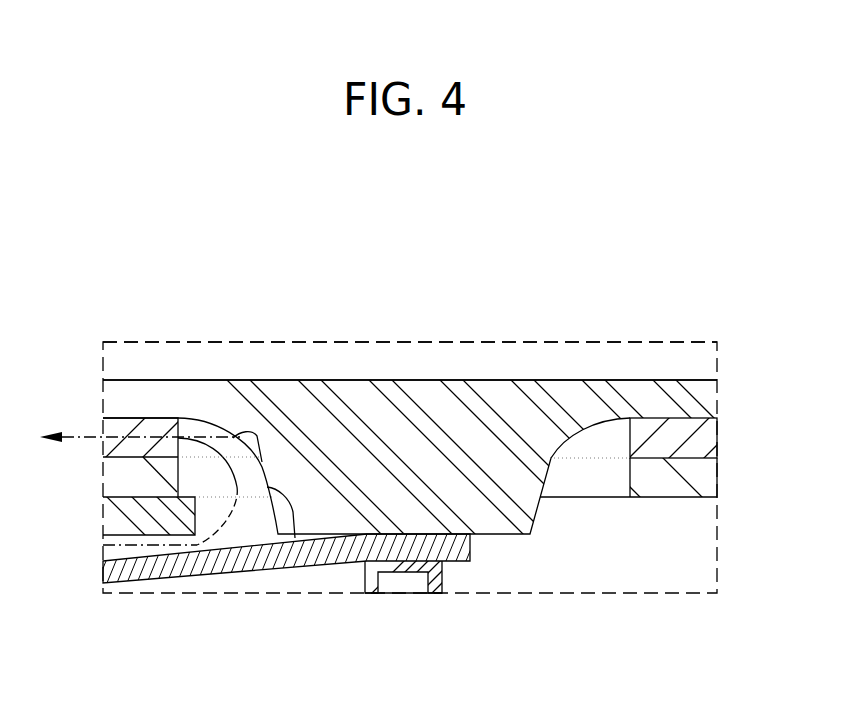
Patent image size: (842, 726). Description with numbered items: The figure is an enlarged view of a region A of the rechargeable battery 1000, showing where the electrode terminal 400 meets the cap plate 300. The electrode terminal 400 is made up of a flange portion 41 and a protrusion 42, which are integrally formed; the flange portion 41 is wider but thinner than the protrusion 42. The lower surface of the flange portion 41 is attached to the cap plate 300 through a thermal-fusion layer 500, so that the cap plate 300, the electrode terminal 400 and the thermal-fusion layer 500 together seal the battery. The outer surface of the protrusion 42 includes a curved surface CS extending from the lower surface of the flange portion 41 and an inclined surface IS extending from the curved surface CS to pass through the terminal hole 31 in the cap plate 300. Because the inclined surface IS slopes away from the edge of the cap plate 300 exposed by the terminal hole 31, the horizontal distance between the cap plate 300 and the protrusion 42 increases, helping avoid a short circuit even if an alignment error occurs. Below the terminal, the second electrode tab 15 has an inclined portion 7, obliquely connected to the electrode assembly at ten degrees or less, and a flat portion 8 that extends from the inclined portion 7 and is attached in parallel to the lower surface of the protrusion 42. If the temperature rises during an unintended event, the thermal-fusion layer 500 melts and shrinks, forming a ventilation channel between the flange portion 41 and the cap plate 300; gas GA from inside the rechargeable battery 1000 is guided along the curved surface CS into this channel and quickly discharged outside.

The rechargeable battery 1000 is at (436, 206).
The region A is at (397, 342).
The electrode terminal 400 is at (323, 290).
The flange portion 41 is at (141, 382).
The protrusion 42 is at (325, 468).
The thermal-fusion layer 500 is at (708, 438).
The cap plate 300 is at (708, 481).
The terminal hole 31 is at (216, 483).
The curved surface CS is at (568, 436).
The inclined surface IS is at (537, 470).
The inclined portion 7 is at (334, 557).
The flat portion 8 is at (417, 552).
The second electrode tab 15 is at (415, 654).
The gas GA is at (126, 548).